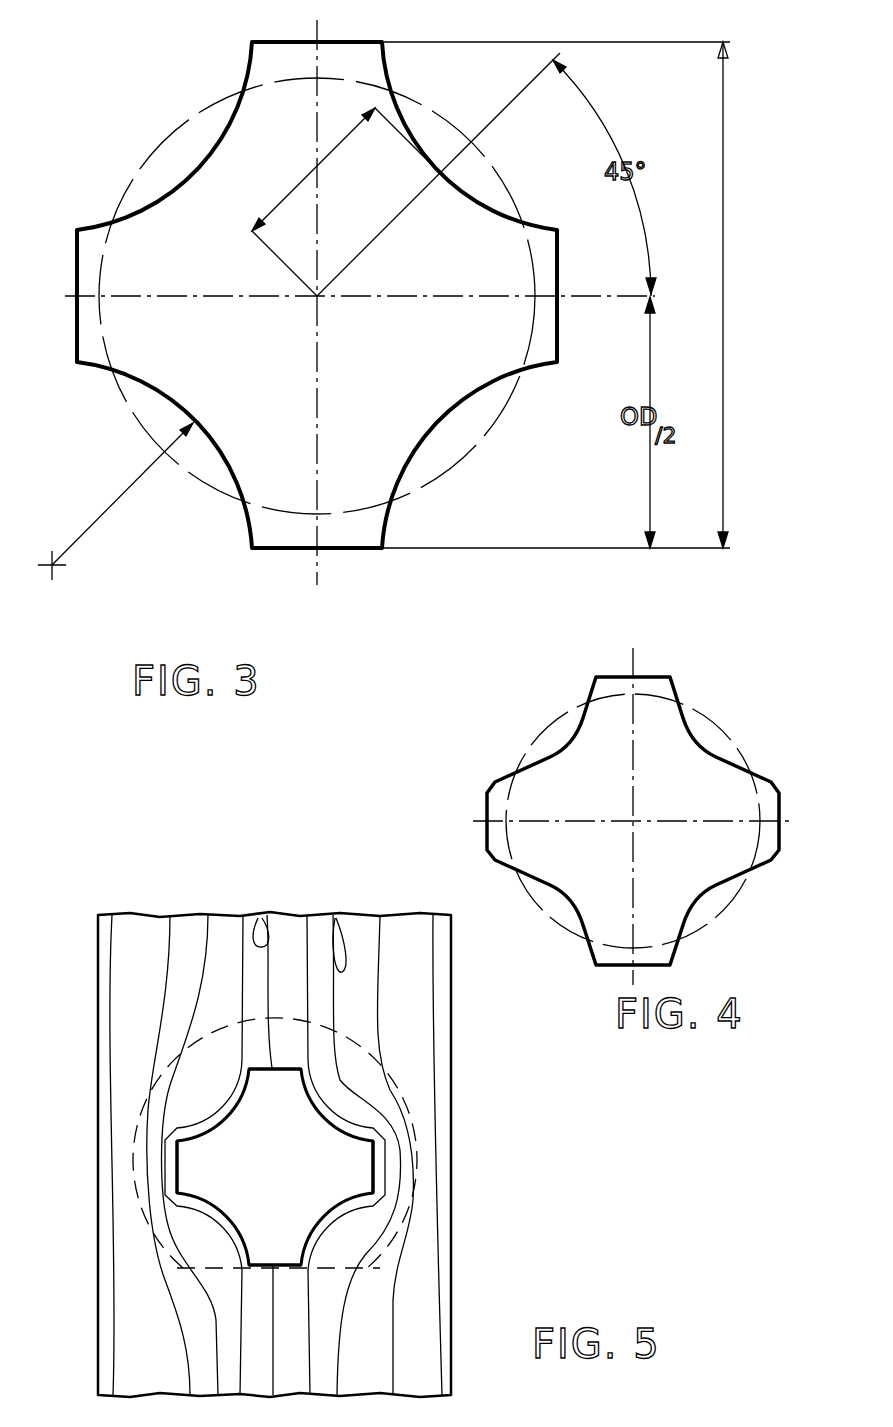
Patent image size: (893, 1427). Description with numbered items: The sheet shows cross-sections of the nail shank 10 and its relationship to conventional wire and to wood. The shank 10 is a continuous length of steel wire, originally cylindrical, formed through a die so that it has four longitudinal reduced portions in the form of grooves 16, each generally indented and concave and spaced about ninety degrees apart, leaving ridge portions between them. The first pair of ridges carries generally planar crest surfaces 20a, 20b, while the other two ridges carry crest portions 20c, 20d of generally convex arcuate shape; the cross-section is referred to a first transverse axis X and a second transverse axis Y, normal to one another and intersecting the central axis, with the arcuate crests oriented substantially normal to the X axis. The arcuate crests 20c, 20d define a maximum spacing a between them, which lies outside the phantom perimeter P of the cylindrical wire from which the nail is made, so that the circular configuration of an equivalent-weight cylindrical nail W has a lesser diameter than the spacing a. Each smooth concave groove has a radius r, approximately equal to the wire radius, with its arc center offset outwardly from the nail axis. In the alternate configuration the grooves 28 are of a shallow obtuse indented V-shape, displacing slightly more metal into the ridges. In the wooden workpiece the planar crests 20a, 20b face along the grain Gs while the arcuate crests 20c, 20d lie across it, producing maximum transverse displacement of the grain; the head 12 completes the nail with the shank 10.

In FIG. 3, the shank 10 is at (322, 360).
In FIG. 5, the shank 10 is at (293, 1163).
In FIG. 5, the head 12 is at (398, 1103).
In FIG. 5, the grooves 16 is at (228, 1118).
In FIG. 3, the planar ridge crest surface 20a is at (78, 258).
In FIG. 5, the planar ridge crest surface 20a is at (272, 1068).
In FIG. 3, the planar ridge crest surface 20b is at (557, 327).
In FIG. 5, the planar ridge crest surface 20b is at (280, 1268).
In FIG. 3, the arcuate crest portion 20c is at (335, 40).
In FIG. 5, the arcuate crest portion 20c is at (378, 1166).
In FIG. 5, the arcuate crest portion 20d is at (176, 1195).
In FIG. 4, the grooves 28 is at (560, 748).
In FIG. 3, the phantom perimeter P is at (195, 108).
In FIG. 3, the first transverse axis X is at (318, 492).
In FIG. 4, the first transverse axis X is at (490, 820).
In FIG. 3, the second transverse axis Y is at (113, 372).
In FIG. 4, the second transverse axis Y is at (632, 667).
In FIG. 3, the radius r is at (115, 501).
In FIG. 3, the spacing a is at (545, 295).
In FIG. 5, the cylindrical nail W is at (178, 912).
In FIG. 5, the grain swirl Gs is at (338, 960).